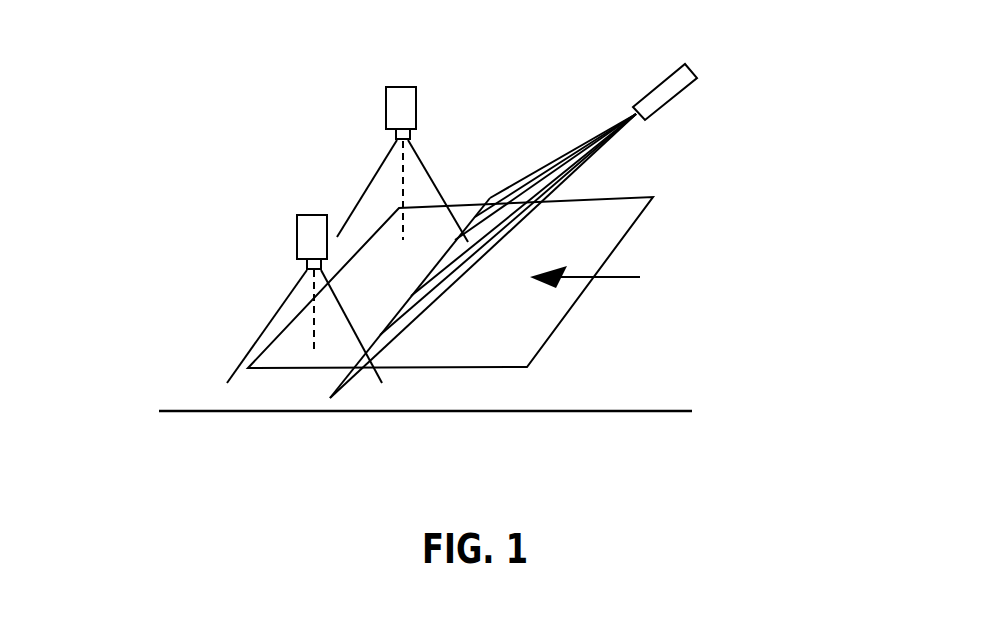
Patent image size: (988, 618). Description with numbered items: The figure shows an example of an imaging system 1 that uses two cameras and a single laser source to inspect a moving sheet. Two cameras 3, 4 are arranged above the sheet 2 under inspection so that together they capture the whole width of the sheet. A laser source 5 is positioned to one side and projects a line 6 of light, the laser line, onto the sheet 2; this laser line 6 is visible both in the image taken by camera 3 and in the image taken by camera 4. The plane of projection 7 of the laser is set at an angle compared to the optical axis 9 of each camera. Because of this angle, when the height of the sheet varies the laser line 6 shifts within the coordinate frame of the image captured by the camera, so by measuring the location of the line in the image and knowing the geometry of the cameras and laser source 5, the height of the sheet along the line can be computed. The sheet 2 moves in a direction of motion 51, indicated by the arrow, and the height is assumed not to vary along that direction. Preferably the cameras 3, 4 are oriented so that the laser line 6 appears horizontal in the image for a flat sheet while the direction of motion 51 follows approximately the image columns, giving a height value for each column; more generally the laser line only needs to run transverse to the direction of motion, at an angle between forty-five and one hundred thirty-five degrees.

The measuring system 1 is at (310, 460).
The sheet 2 is at (632, 203).
The camera 3 is at (386, 97).
The camera 4 is at (297, 232).
The laser source 5 is at (660, 83).
The laser line 6 is at (475, 217).
The plane of projection 7 is at (535, 177).
The optical axis 9 is at (402, 183).
The direction of motion 51 is at (617, 277).